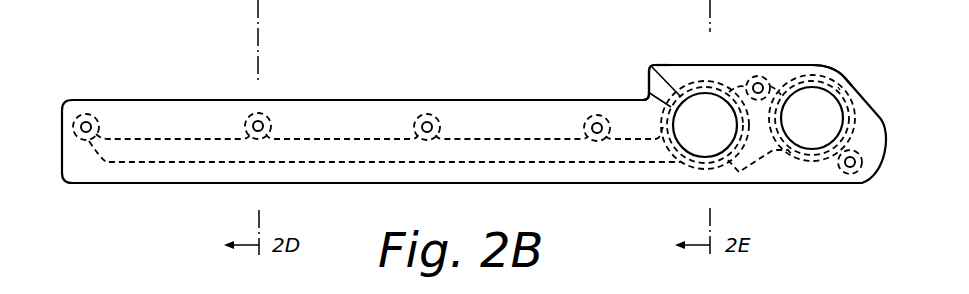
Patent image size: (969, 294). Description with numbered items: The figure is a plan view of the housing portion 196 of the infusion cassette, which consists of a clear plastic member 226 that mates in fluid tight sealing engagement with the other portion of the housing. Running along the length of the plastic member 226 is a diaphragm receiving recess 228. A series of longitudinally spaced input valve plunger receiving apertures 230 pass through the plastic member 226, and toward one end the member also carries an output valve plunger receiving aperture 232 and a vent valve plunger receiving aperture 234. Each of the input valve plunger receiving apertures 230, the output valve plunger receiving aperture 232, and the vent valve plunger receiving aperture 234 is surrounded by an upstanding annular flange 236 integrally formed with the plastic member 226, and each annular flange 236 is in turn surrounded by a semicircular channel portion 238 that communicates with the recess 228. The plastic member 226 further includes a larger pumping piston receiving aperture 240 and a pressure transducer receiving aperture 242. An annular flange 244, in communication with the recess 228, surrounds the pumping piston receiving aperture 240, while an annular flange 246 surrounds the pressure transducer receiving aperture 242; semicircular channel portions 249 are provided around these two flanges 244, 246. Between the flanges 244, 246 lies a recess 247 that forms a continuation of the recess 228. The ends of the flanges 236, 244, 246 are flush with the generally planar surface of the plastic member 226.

The housing portion 196 is at (218, 196).
The clear plastic member 226 is at (320, 77).
The diaphragm receiving recess 228 is at (358, 152).
The input valve plunger receiving apertures 230 is at (91, 120).
The output valve plunger receiving aperture 232 is at (758, 76).
The vent valve plunger receiving aperture 234 is at (854, 168).
The upstanding annular flange 236 is at (81, 127).
The semicircular channel portion 238 is at (99, 122).
The pumping piston receiving aperture 240 is at (701, 142).
The pressure transducer receiving aperture 242 is at (809, 128).
The annular flange 244 is at (648, 93).
The annular flange 246 is at (822, 68).
The recess 247 is at (763, 111).
The semicircular channel portions 249 is at (657, 64).